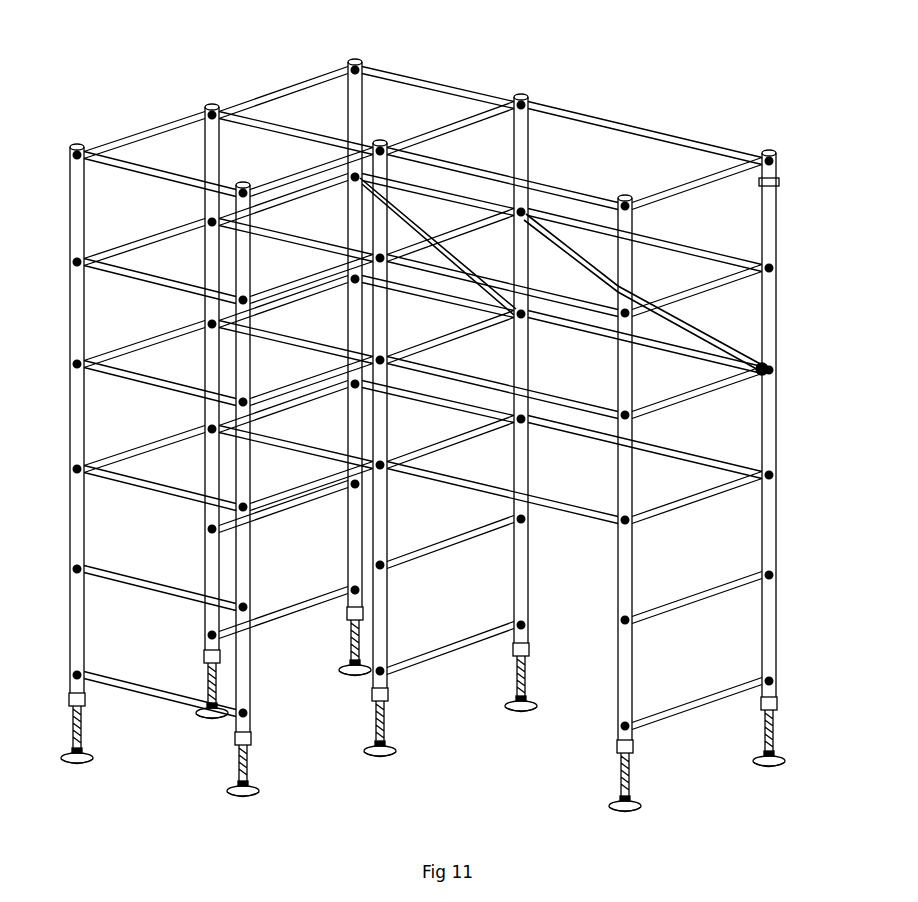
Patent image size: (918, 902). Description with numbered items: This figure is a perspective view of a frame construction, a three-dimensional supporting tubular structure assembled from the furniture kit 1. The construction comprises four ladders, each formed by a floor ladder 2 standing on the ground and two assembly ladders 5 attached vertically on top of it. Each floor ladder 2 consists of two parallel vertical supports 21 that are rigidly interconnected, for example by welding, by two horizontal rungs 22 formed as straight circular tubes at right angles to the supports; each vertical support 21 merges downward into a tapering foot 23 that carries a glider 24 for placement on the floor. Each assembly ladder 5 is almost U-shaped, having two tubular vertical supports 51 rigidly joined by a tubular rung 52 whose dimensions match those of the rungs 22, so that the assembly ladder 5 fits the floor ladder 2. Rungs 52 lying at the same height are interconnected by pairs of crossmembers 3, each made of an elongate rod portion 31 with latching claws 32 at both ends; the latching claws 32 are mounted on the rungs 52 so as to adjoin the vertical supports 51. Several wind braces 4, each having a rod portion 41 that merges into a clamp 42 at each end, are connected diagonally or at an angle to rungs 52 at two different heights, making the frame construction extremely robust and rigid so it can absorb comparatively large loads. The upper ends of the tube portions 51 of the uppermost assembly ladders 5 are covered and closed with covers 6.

The furniture kit 1 is at (157, 112).
The floor ladder 2 is at (423, 708).
The crossmember 3 is at (423, 113).
The wind brace 4 is at (594, 238).
The assembly ladder 5 is at (795, 226).
The cover 6 is at (770, 150).
The vertical support 21 is at (603, 720).
The rung 22 is at (157, 696).
The foot 23 is at (254, 756).
The glider 24 is at (398, 753).
The rod portion 31 is at (418, 90).
The latching claw 32 is at (323, 80).
The rod portion 41 is at (547, 240).
The clamp 42 is at (760, 371).
The vertical support 51 is at (770, 183).
The rung 52 is at (722, 165).